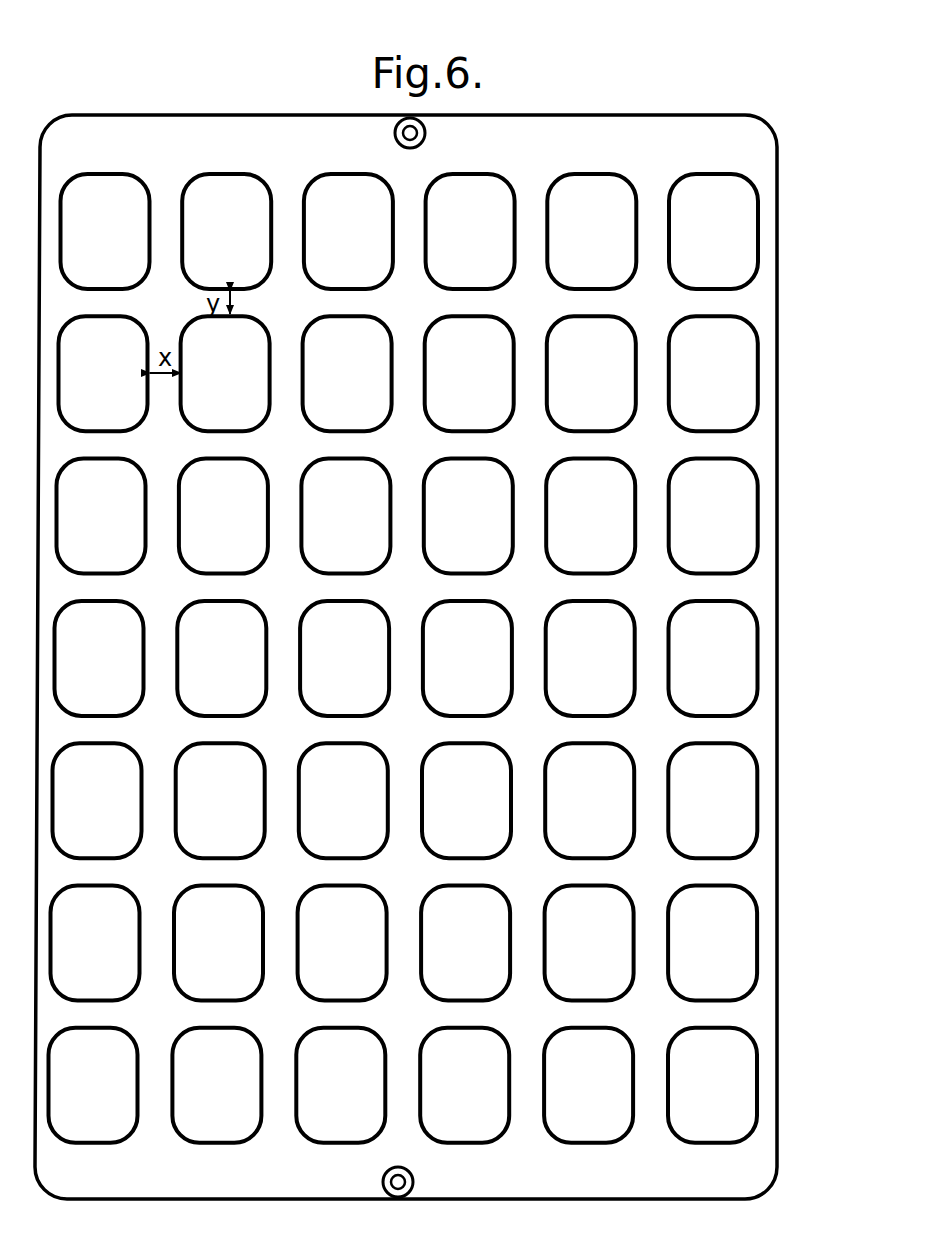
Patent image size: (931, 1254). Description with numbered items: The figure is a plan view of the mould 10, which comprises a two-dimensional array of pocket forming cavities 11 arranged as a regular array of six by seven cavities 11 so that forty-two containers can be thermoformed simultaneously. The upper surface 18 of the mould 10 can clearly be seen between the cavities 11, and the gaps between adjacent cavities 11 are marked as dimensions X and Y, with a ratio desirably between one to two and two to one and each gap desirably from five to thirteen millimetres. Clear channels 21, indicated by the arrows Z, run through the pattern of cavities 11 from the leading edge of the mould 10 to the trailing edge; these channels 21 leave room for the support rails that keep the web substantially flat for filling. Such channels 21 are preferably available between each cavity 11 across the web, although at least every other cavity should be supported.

The mould 10 is at (758, 293).
The pocket forming cavities 11 is at (698, 243).
The upper surface 18 is at (272, 318).
The channels 21 is at (390, 602).
The arrows Z is at (660, 448).